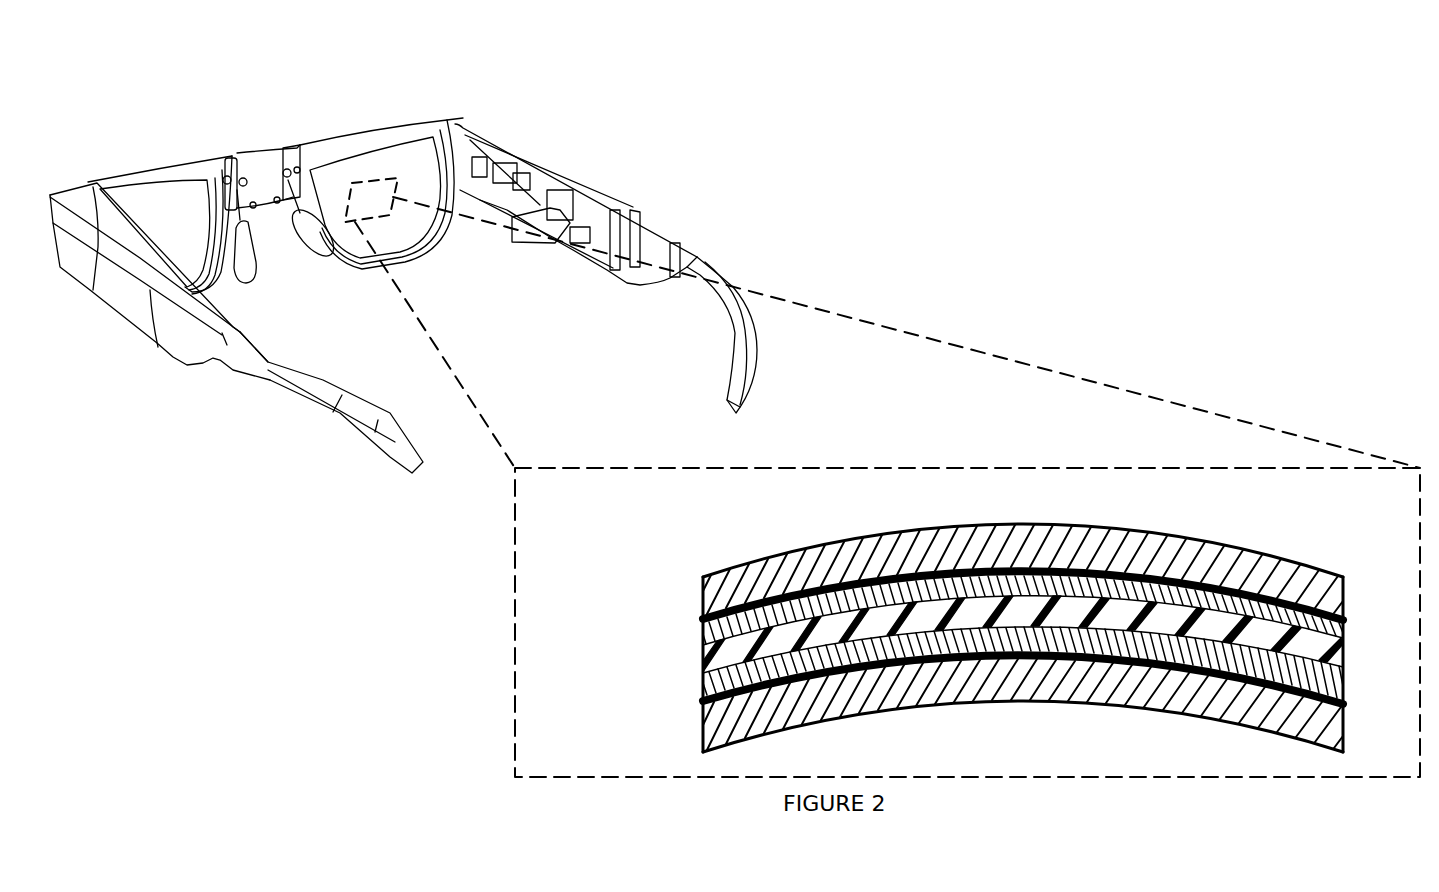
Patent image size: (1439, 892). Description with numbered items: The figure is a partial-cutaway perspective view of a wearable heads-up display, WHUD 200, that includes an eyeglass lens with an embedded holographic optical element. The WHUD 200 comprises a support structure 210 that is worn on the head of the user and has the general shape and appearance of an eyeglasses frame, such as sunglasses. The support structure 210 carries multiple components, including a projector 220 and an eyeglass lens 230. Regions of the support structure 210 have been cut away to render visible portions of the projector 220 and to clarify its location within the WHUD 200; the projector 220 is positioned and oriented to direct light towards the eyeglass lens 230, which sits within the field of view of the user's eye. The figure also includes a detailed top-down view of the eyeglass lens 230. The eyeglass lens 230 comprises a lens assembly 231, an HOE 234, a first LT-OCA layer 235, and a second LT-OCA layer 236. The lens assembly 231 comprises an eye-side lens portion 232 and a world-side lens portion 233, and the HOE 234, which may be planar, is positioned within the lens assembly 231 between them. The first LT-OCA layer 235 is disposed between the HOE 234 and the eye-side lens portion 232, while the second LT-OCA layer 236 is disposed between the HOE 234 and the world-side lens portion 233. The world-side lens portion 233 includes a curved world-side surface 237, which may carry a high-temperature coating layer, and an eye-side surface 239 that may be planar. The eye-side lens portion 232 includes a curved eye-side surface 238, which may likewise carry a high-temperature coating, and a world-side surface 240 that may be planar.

The WHUD 200 is at (183, 116).
The support structure 210 is at (130, 320).
The projector 220 is at (638, 206).
The eyeglass lens 230 is at (368, 228).
The lens assembly 231 is at (710, 728).
The eye-side lens portion 232 is at (1327, 728).
The world-side lens portion 233 is at (1327, 595).
The HOE 234 is at (1327, 667).
The first LT-OCA layer 235 is at (730, 687).
The second LT-OCA layer 236 is at (730, 635).
The world-side surface of the world-side lens portion 237 is at (780, 556).
The eye-side surface of the eye-side lens portion 238 is at (1080, 702).
The eye-side surface of the world-side lens portion 239 is at (1143, 573).
The world-side surface of the eye-side lens portion 240 is at (1143, 663).